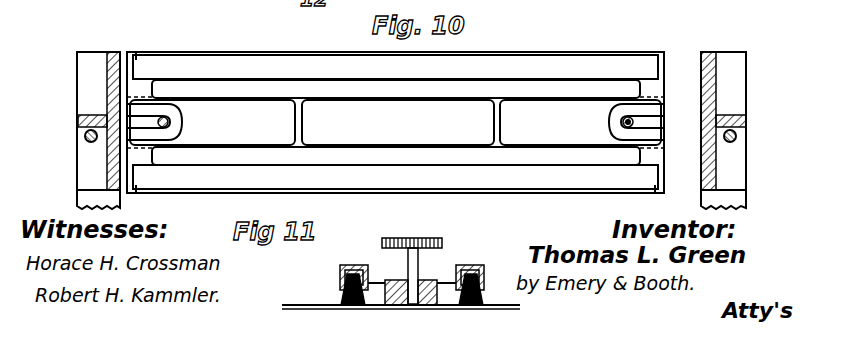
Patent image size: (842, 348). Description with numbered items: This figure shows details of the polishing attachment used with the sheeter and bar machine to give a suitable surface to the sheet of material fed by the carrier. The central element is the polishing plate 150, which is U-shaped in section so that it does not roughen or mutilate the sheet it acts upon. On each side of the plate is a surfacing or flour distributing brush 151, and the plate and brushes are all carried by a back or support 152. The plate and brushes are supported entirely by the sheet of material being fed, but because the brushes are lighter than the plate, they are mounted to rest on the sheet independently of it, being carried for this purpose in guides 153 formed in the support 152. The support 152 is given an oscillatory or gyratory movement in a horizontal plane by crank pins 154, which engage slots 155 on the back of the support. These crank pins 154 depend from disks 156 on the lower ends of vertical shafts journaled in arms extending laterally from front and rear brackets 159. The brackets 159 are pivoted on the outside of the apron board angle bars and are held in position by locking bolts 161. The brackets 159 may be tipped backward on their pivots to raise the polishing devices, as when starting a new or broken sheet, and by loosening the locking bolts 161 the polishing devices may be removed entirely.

In FIG. 10, the polishing plate 150 is at (271, 100).
In FIG. 11, the polishing plate 150 is at (410, 307).
In FIG. 11, the surfacing or flour distributing brush 151 is at (342, 296).
In FIG. 10, the back or support 152 is at (225, 48).
In FIG. 11, the back or support 152 is at (346, 265).
In FIG. 10, the guide 153 is at (150, 44).
In FIG. 11, the guide 153 is at (340, 276).
In FIG. 10, the crank pin 154 is at (169, 122).
In FIG. 11, the crank pin 154 is at (405, 258).
In FIG. 10, the slot 155 is at (650, 123).
In FIG. 11, the slot 155 is at (420, 284).
In FIG. 11, the disk 156 is at (442, 243).
In FIG. 10, the bracket 159 is at (107, 90).
In FIG. 10, the locking bolt 161 is at (84, 135).